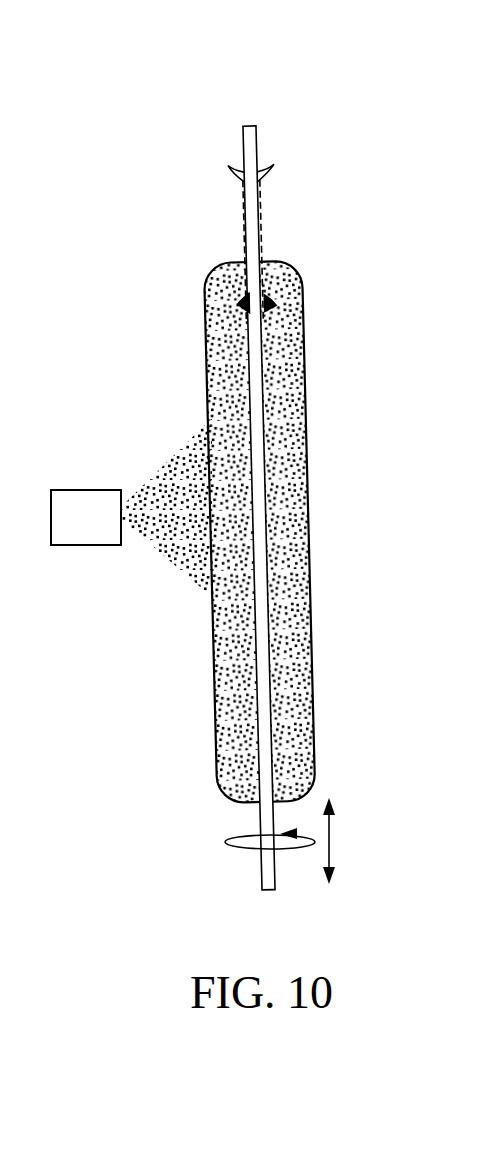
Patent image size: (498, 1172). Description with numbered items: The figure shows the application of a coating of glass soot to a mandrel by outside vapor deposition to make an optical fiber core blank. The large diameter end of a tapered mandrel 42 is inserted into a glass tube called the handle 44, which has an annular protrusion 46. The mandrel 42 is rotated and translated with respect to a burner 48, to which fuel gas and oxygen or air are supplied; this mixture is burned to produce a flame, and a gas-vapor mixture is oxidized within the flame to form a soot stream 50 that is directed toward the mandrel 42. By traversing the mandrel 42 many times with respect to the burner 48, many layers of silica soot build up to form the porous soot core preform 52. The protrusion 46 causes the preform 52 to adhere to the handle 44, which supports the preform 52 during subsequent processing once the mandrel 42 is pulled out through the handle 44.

The tapered mandrel 42 is at (243, 148).
The handle 44 is at (262, 250).
The annular protrusion 46 is at (272, 309).
The burner 48 is at (87, 490).
The soot stream 50 is at (178, 563).
The porous soot core preform 52 is at (349, 494).